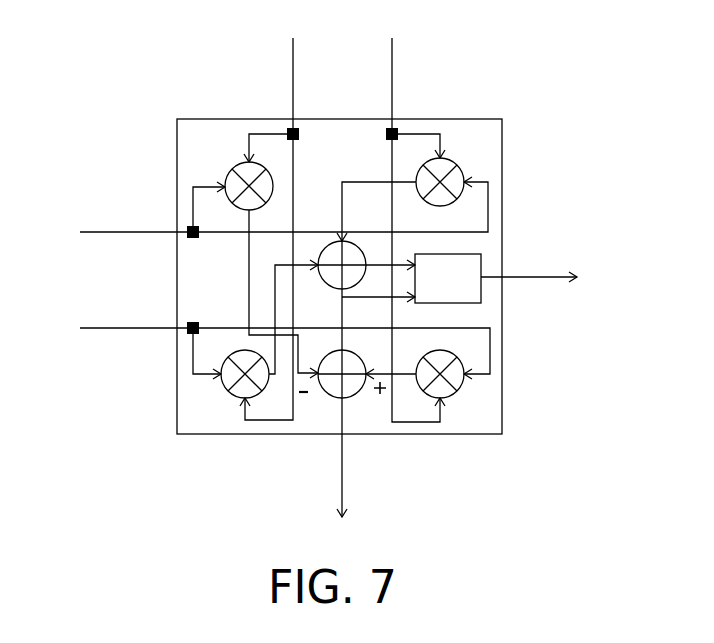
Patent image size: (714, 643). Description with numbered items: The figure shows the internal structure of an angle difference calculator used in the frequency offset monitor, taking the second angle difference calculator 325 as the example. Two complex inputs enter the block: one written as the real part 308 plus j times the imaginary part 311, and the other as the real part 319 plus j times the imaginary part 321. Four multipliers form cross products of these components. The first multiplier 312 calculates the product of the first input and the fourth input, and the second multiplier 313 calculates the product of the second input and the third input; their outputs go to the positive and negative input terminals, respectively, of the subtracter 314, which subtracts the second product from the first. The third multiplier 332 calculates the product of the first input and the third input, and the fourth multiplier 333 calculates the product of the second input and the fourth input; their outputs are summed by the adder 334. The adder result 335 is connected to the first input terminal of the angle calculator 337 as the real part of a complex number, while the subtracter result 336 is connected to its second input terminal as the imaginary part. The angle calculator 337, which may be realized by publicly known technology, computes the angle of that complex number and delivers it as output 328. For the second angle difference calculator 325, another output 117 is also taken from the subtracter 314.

The output of the subtracter 117 is at (345, 483).
The real part of the first complex input 308 is at (290, 105).
The imaginary part of the first complex input 311 is at (393, 103).
The first multiplier 312 is at (458, 390).
The second multiplier 313 is at (228, 173).
The subtracter 314 is at (323, 392).
The real part of the second complex input 319 is at (100, 329).
The imaginary part of the second complex input 321 is at (98, 232).
The second angle difference calculator 325 is at (502, 228).
The output of the angle calculator 328 is at (515, 278).
The third multiplier 332 is at (225, 392).
The fourth multiplier 333 is at (458, 163).
The adder 334 is at (320, 247).
The real part of the angle calculator input 335 is at (380, 263).
The imaginary part of the angle calculator input 336 is at (345, 343).
The angle calculator 337 is at (483, 263).